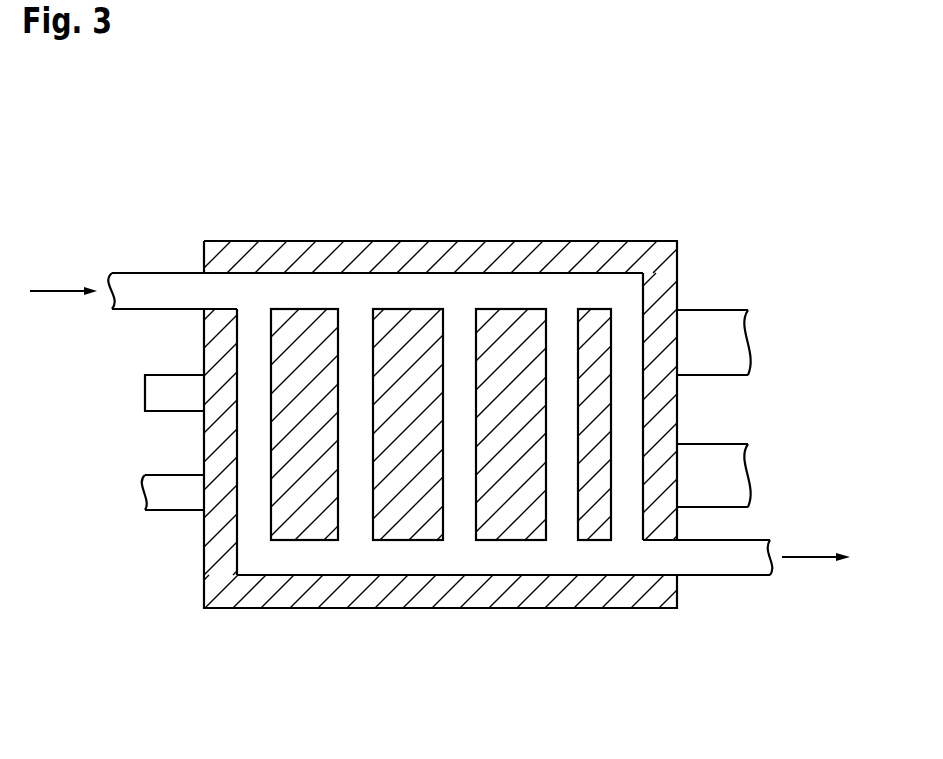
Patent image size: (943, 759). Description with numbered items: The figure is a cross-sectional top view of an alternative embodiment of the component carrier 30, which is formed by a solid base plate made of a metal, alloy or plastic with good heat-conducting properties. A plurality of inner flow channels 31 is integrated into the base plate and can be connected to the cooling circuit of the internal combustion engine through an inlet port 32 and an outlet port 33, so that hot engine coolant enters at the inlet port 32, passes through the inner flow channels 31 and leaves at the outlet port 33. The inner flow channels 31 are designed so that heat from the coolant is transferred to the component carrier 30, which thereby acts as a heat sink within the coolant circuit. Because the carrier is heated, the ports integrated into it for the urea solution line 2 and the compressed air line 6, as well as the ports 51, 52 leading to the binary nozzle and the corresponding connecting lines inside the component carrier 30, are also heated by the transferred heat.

The component carrier 30 is at (408, 196).
The inner flow channels 31 is at (357, 355).
The inlet port 32 is at (217, 290).
The outlet port 33 is at (663, 560).
The urea solution line 2 is at (162, 387).
The compressed air line 6 is at (162, 487).
The port to the binary nozzle 51 is at (720, 344).
The port to the binary nozzle 52 is at (720, 476).